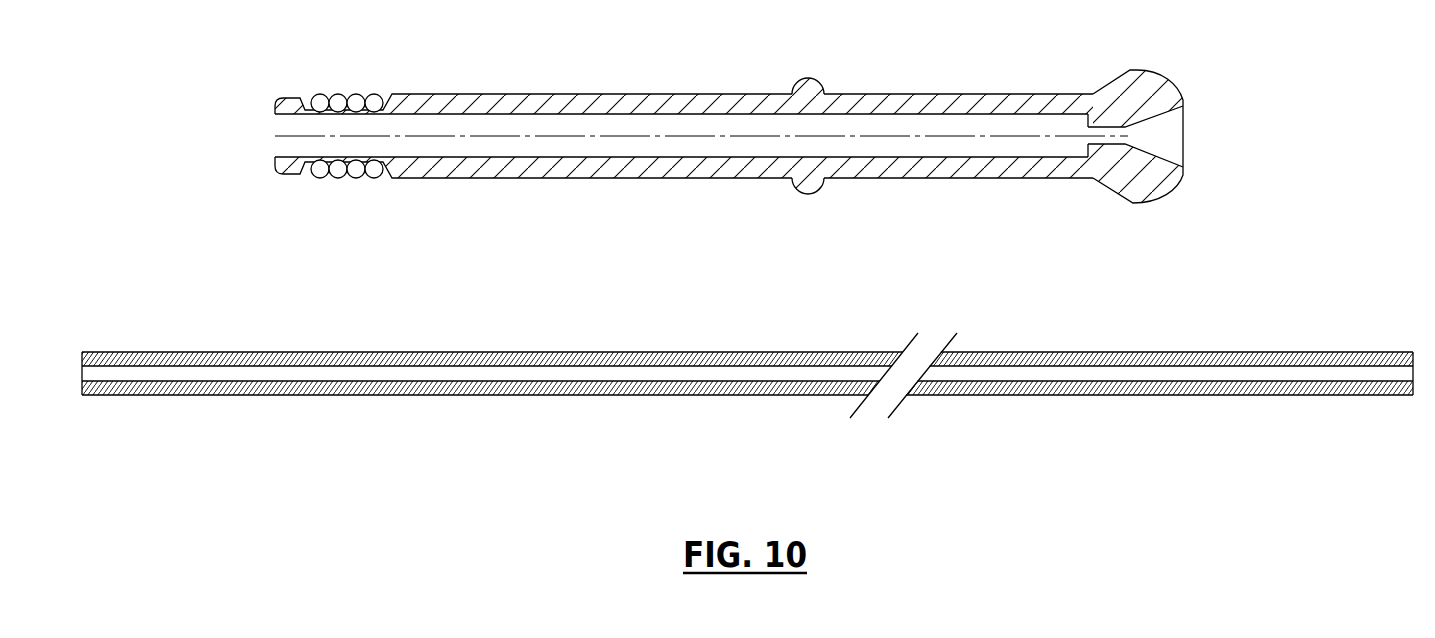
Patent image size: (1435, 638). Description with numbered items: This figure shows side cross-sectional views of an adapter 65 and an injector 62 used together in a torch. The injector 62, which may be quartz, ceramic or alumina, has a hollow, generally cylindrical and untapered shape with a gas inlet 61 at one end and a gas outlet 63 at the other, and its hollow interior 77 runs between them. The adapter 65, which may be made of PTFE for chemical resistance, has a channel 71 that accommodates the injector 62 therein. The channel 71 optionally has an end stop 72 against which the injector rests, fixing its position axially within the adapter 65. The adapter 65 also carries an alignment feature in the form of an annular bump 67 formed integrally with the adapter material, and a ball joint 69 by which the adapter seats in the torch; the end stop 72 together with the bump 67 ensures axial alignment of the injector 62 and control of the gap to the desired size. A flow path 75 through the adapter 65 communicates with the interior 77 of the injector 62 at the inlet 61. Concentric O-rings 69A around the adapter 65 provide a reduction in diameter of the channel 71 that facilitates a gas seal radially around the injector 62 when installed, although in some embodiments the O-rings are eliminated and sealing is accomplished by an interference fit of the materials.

The gas inlet 61 is at (1413, 367).
The injector 62 is at (500, 352).
The gas outlet 63 is at (82, 375).
The adapter 65 is at (533, 94).
The annular bump 67 is at (807, 78).
The ball joint 69 is at (1145, 72).
The O-rings 69A is at (340, 98).
The channel 71 is at (898, 147).
The end stop 72 is at (1080, 148).
The flow path 75 is at (1102, 125).
The interior 77 is at (778, 373).